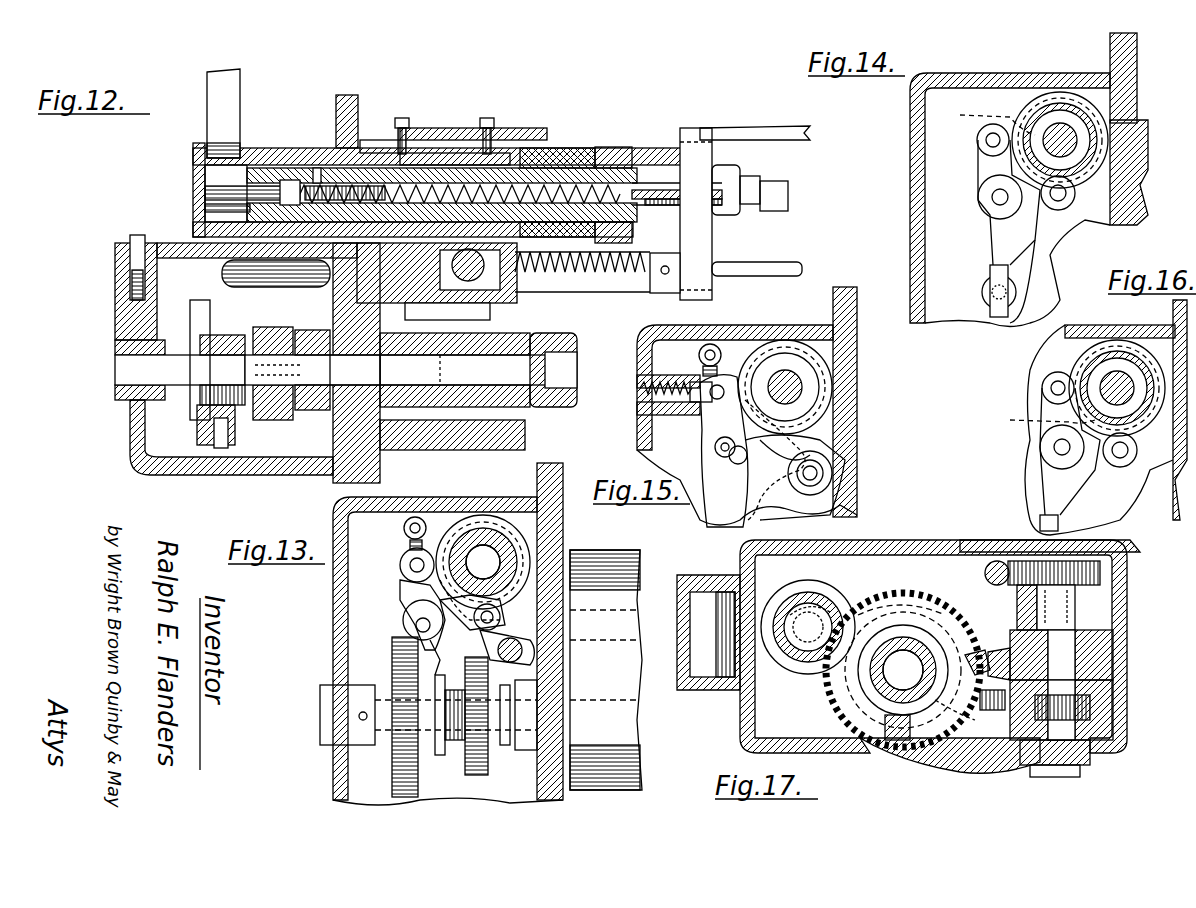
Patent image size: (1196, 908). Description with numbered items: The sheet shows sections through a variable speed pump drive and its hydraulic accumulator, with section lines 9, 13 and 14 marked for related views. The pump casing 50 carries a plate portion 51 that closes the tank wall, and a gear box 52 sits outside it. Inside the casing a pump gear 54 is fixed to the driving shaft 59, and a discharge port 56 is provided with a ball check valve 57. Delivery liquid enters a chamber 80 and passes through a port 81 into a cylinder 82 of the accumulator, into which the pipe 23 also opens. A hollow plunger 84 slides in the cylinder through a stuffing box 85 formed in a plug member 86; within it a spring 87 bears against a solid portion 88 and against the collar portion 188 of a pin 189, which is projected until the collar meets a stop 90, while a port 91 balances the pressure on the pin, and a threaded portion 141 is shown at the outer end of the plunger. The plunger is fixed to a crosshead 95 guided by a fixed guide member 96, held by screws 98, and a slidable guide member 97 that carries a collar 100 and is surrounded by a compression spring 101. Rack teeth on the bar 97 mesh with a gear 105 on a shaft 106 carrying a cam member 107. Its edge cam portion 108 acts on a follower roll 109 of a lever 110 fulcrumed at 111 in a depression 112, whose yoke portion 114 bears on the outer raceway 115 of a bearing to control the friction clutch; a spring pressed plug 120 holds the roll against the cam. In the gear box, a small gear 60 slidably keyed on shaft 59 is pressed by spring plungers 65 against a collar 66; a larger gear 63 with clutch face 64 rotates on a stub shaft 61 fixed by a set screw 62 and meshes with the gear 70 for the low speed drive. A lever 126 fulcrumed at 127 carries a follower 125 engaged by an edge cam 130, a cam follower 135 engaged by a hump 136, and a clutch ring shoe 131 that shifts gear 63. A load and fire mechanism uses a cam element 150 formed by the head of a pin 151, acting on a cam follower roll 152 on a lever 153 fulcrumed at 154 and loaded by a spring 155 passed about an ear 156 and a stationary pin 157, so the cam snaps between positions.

In FIG. 13, the section line 9 is at (655, 580).
In FIG. 17, the section line 9 is at (1162, 565).
In FIG. 17, the section line 13 is at (1172, 650).
In FIG. 17, the section line 14 is at (1162, 672).
In FIG. 12, the pipe 23 is at (222, 93).
In FIG. 12, the casing 50 is at (440, 130).
In FIG. 13, the casing 50 is at (630, 750).
In FIG. 12, the plate portion 51 is at (345, 95).
In FIG. 15, the plate portion 51 is at (845, 300).
In FIG. 13, the plate portion 51 is at (550, 631).
In FIG. 12, the gear box 52 is at (130, 420).
In FIG. 14, the gear box 52 is at (915, 212).
In FIG. 15, the gear box 52 is at (645, 440).
In FIG. 17, the gear box 52 is at (745, 729).
In FIG. 12, the pump gear 54 is at (525, 395).
In FIG. 12, the discharge port 56 is at (447, 311).
In FIG. 12, the ball check valve 57 is at (468, 265).
In FIG. 12, the driving shaft 59 is at (470, 370).
In FIG. 13, the driving shaft 59 is at (620, 735).
In FIG. 17, the driving shaft 59 is at (865, 690).
In FIG. 12, the small gear 60 is at (310, 330).
In FIG. 13, the small gear 60 is at (480, 760).
In FIG. 12, the stub shaft 61 is at (180, 370).
In FIG. 13, the stub shaft 61 is at (456, 715).
In FIG. 12, the set screw 62 is at (150, 345).
In FIG. 13, the set screw 62 is at (360, 715).
In FIG. 13, the larger gear 63 is at (405, 672).
In FIG. 17, the larger gear 63 is at (903, 593).
In FIG. 12, the clutch face 64 is at (268, 330).
In FIG. 13, the clutch face 64 is at (442, 757).
In FIG. 12, the spring plungers 65 is at (215, 335).
In FIG. 13, the spring plungers 65 is at (510, 712).
In FIG. 12, the collar 66 is at (330, 392).
In FIG. 13, the collar 66 is at (527, 715).
In FIG. 17, the gear 70 is at (795, 600).
In FIG. 12, the chamber 80 is at (500, 246).
In FIG. 12, the port 81 is at (440, 263).
In FIG. 12, the cylinder 82 is at (215, 178).
In FIG. 12, the plunger 84 is at (372, 180).
In FIG. 12, the stuffing box 85 is at (585, 170).
In FIG. 12, the plug member 86 is at (540, 185).
In FIG. 12, the spring 87 is at (555, 185).
In FIG. 12, the solid portion 88 is at (645, 190).
In FIG. 12, the stop 90 is at (215, 208).
In FIG. 12, the port 91 is at (317, 168).
In FIG. 12, the crosshead 95 is at (700, 250).
In FIG. 12, the guide member 96 is at (752, 128).
In FIG. 12, the guide member 97 is at (770, 262).
In FIG. 17, the guide member 97 is at (985, 572).
In FIG. 12, the screws 98 is at (403, 118).
In FIG. 12, the collar 100 is at (662, 280).
In FIG. 12, the compression spring 101 is at (590, 283).
In FIG. 16, the gear 105 is at (1073, 426).
In FIG. 17, the gear 105 is at (1100, 565).
In FIG. 14, the shaft 106 is at (1080, 125).
In FIG. 16, the shaft 106 is at (1122, 370).
In FIG. 15, the shaft 106 is at (790, 375).
In FIG. 13, the shaft 106 is at (482, 545).
In FIG. 17, the shaft 106 is at (1065, 610).
In FIG. 14, the cam member 107 is at (1065, 125).
In FIG. 16, the cam member 107 is at (1110, 375).
In FIG. 15, the cam member 107 is at (805, 388).
In FIG. 13, the cam member 107 is at (500, 565).
In FIG. 17, the cam member 107 is at (1092, 745).
In FIG. 15, the edge cam portion 108 is at (792, 340).
In FIG. 17, the edge cam portion 108 is at (986, 654).
In FIG. 15, the follower roll 109 is at (785, 380).
In FIG. 17, the follower roll 109 is at (1085, 655).
In FIG. 15, the lever 110 is at (715, 440).
In FIG. 17, the lever 110 is at (929, 612).
In FIG. 17, the fulcrum 111 is at (730, 590).
In FIG. 13, the depression 112 is at (661, 659).
In FIG. 17, the yoke portion 114 is at (845, 600).
In FIG. 17, the outer raceway 115 is at (820, 605).
In FIG. 15, the spring pressed plug 120 is at (690, 400).
In FIG. 14, the follower 125 is at (1066, 200).
In FIG. 16, the follower 125 is at (1124, 468).
In FIG. 15, the follower 125 is at (815, 450).
In FIG. 13, the follower 125 is at (500, 620).
In FIG. 17, the follower 125 is at (993, 712).
In FIG. 12, the lever 126 is at (232, 425).
In FIG. 14, the lever 126 is at (998, 232).
In FIG. 16, the lever 126 is at (1070, 451).
In FIG. 15, the lever 126 is at (710, 505).
In FIG. 13, the lever 126 is at (400, 595).
In FIG. 17, the lever 126 is at (960, 722).
In FIG. 14, the fulcrum 127 is at (995, 200).
In FIG. 16, the fulcrum 127 is at (1055, 448).
In FIG. 15, the fulcrum 127 is at (725, 460).
In FIG. 13, the fulcrum 127 is at (410, 612).
In FIG. 14, the edge cam 130 is at (1025, 108).
In FIG. 16, the edge cam 130 is at (1138, 420).
In FIG. 17, the edge cam 130 is at (1105, 690).
In FIG. 12, the clutch ring shoe 131 is at (222, 440).
In FIG. 14, the clutch ring shoe 131 is at (990, 297).
In FIG. 16, the clutch ring shoe 131 is at (1040, 522).
In FIG. 17, the clutch ring shoe 131 is at (890, 735).
In FIG. 14, the cam follower 135 is at (985, 140).
In FIG. 16, the cam follower 135 is at (1052, 380).
In FIG. 13, the cam follower 135 is at (400, 565).
In FIG. 17, the cam follower 135 is at (1030, 672).
In FIG. 14, the hump 136 is at (981, 118).
In FIG. 16, the hump 136 is at (1040, 419).
In FIG. 12, the threaded rod 141 is at (660, 205).
In FIG. 15, the cam element 150 is at (825, 425).
In FIG. 13, the cam element 150 is at (415, 592).
In FIG. 13, the pin 151 is at (520, 540).
In FIG. 13, the cam follower roll 152 is at (510, 610).
In FIG. 17, the cam follower roll 152 is at (946, 639).
In FIG. 15, the lever 153 is at (745, 462).
In FIG. 13, the lever 153 is at (446, 657).
In FIG. 15, the fulcrum 154 is at (825, 473).
In FIG. 13, the fulcrum 154 is at (522, 650).
In FIG. 15, the loading spring 155 is at (738, 362).
In FIG. 13, the loading spring 155 is at (410, 545).
In FIG. 15, the ear 156 is at (758, 468).
In FIG. 13, the ear 156 is at (445, 515).
In FIG. 15, the stationary pin 157 is at (715, 345).
In FIG. 13, the stationary pin 157 is at (416, 517).
In FIG. 12, the collar portion 188 is at (290, 180).
In FIG. 12, the pin 189 is at (213, 194).